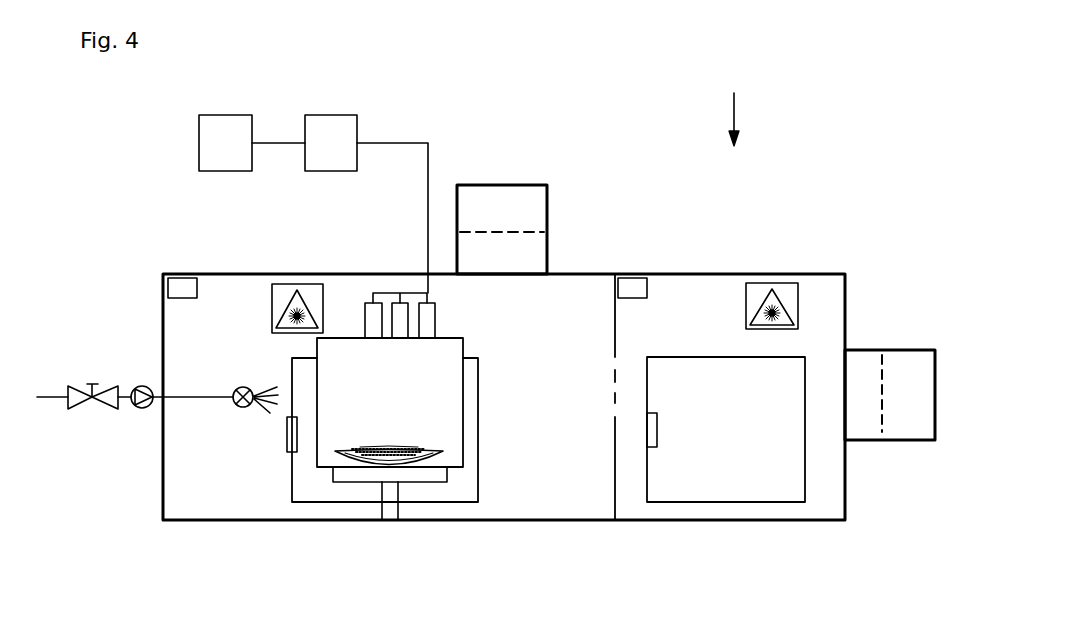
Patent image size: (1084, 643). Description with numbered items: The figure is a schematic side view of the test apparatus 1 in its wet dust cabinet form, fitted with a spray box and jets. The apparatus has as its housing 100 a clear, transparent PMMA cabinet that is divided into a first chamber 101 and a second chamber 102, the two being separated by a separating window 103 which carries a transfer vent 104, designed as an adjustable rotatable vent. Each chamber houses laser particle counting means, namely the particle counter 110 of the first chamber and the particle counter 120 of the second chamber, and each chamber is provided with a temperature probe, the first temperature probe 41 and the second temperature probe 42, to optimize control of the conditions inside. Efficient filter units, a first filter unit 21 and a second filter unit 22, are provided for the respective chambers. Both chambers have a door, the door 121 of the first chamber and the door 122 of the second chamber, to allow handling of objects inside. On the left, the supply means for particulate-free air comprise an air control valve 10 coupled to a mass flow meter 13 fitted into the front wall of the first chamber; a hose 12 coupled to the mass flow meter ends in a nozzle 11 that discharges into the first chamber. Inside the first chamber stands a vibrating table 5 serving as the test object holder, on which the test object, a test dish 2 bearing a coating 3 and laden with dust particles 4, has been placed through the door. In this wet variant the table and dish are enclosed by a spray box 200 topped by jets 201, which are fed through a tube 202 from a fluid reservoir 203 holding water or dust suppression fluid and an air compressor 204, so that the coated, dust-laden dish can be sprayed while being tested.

The test apparatus 1 is at (733, 107).
The test dish 2 is at (450, 460).
The coating 3 is at (440, 450).
The particles 4 is at (398, 452).
The table 5 is at (410, 480).
The air control valve 10 is at (93, 385).
The nozzle 11 is at (252, 408).
The hose 12 is at (183, 397).
The mass flow meter 13 is at (143, 410).
The first filter unit 21 is at (536, 196).
The second filter unit 22 is at (873, 358).
The first temperature probe 41 is at (183, 284).
The second temperature probe 42 is at (632, 285).
The housing 100 is at (248, 274).
The first chamber 101 is at (514, 500).
The second chamber 102 is at (649, 347).
The separating window 103 is at (613, 465).
The transfer vent 104 is at (612, 395).
The particle counter of first chamber 110 is at (292, 305).
The particle counter of second chamber 120 is at (760, 290).
The door 121 is at (360, 497).
The door 122 is at (695, 503).
The spray box 200 is at (470, 352).
The jet 201 is at (432, 318).
The tube 202 is at (412, 142).
The fluid reservoir 203 is at (322, 120).
The air compressor 204 is at (222, 120).